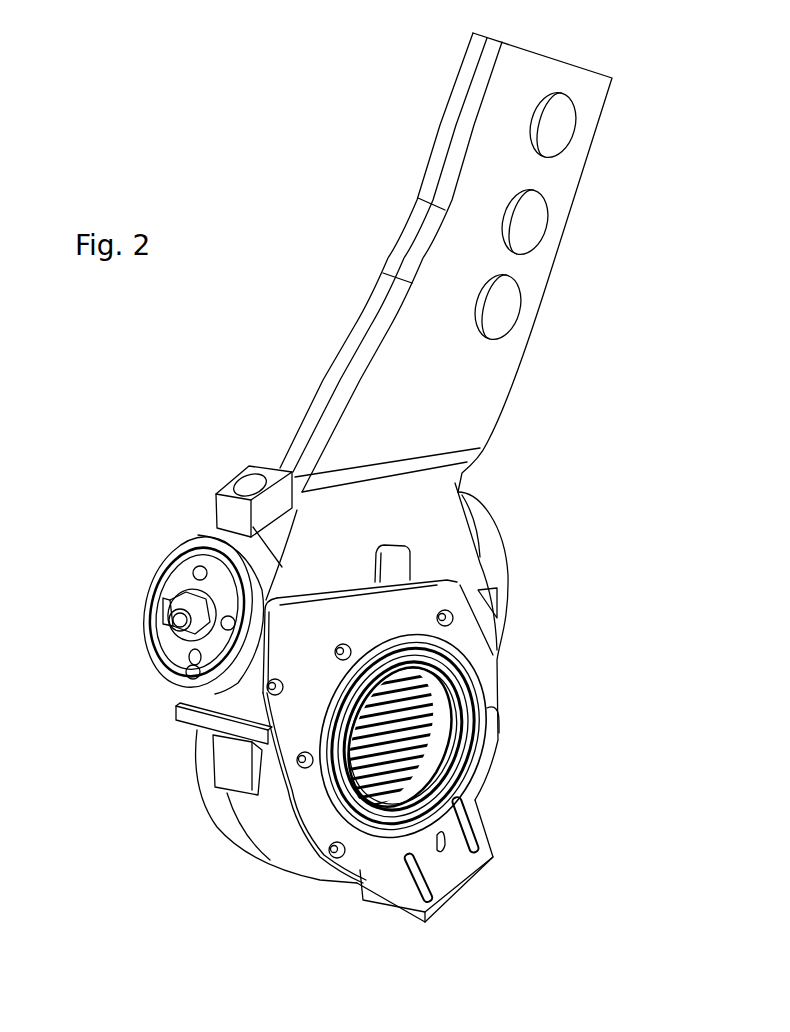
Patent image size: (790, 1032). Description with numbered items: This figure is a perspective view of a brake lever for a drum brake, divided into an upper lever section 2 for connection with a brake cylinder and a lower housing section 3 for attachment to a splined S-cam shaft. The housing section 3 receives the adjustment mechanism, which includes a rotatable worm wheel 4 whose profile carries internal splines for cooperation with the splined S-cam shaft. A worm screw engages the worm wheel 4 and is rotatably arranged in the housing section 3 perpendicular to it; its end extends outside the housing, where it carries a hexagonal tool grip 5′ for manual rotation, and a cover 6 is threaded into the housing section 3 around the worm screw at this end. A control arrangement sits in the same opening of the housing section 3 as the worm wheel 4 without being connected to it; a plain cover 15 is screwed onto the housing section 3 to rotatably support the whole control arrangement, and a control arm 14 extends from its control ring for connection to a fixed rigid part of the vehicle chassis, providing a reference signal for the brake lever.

The upper lever section 2 is at (480, 378).
The lower housing section 3 is at (267, 833).
The rotatable worm wheel 4 is at (428, 741).
The hexagonal tool grip 5′ is at (190, 667).
The cover 6 is at (182, 577).
The control arm 14 is at (443, 867).
The plain cover 15 is at (437, 597).